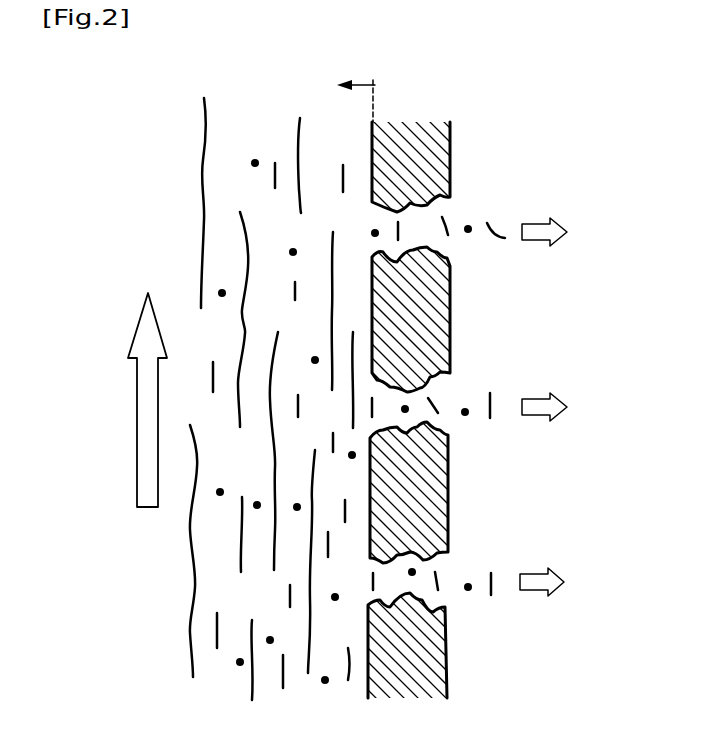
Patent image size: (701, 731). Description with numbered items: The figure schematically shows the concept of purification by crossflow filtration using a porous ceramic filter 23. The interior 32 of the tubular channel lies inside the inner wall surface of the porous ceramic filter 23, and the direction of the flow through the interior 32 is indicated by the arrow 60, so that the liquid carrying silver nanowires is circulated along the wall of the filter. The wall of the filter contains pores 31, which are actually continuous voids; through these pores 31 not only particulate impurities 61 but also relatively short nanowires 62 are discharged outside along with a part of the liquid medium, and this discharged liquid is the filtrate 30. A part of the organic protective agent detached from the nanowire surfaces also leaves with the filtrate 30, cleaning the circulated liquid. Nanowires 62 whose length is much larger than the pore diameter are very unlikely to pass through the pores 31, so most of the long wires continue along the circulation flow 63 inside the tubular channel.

The porous ceramic filter 23 is at (416, 125).
The filtrate 30 is at (557, 407).
The pores 31 is at (447, 390).
The interior of the tubular channel 32 is at (356, 89).
The direction of flow 60 is at (137, 400).
The particulate impurities 61 is at (255, 162).
The nanowires 62 is at (497, 229).
The flow line 63 is at (202, 195).